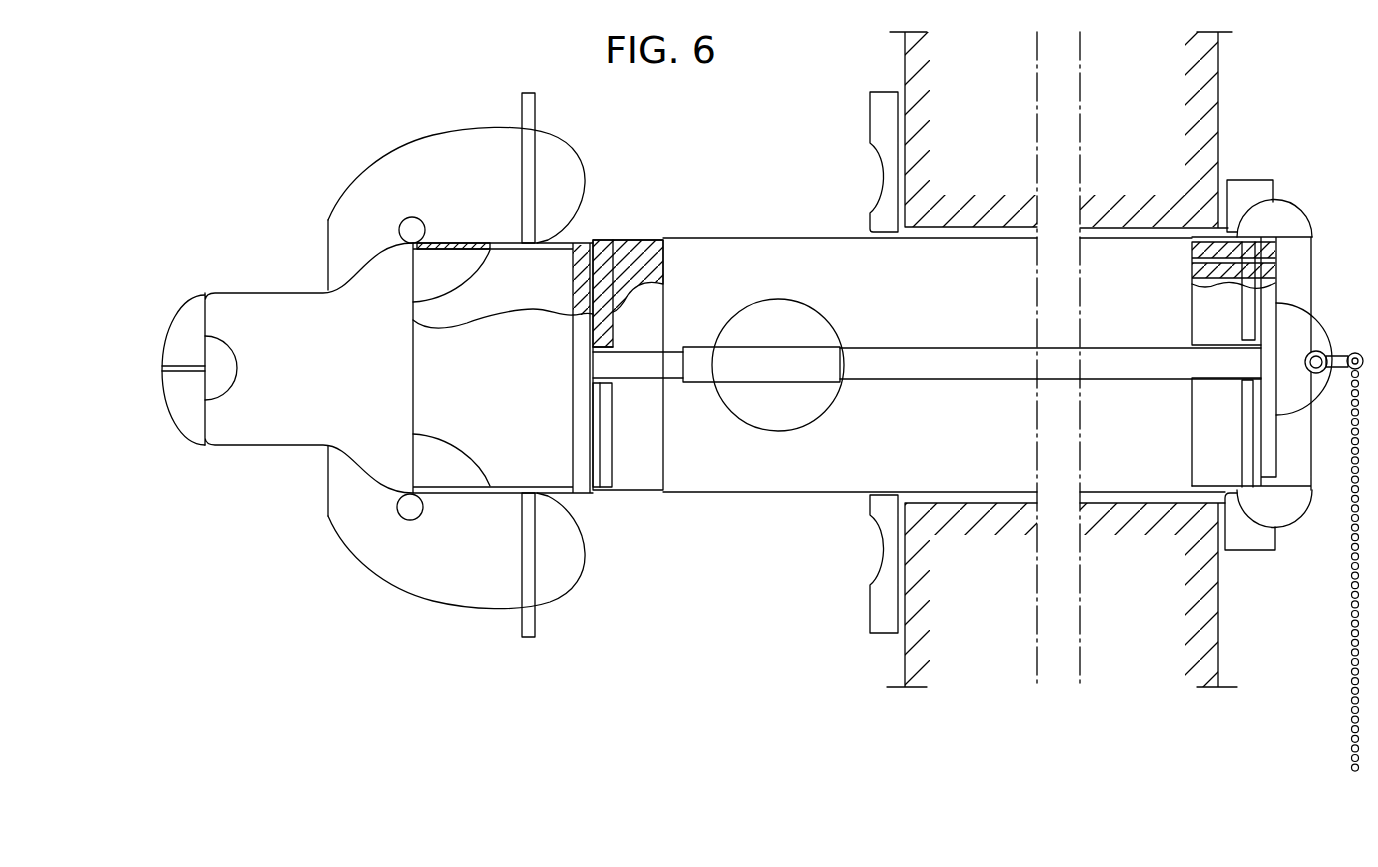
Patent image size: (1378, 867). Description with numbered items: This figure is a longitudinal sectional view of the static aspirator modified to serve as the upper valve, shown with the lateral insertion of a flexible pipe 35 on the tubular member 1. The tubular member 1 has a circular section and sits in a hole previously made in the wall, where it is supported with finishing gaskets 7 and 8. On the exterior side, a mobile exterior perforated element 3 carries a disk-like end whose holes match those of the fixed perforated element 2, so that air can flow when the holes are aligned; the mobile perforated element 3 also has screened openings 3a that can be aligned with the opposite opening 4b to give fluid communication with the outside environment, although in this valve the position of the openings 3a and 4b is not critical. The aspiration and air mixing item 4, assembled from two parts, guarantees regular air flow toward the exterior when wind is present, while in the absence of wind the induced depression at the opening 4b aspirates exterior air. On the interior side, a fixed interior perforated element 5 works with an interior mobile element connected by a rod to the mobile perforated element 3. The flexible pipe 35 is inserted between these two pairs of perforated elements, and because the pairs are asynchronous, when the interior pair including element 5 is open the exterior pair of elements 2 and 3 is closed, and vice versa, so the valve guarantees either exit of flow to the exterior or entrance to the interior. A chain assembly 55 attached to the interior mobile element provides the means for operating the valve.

The tubular member 1 is at (944, 365).
The fixed perforated element 2 is at (628, 365).
The mobile exterior perforated element 3 is at (503, 368).
The screened openings 3a is at (423, 253).
The aspiration and air mixing item 4 is at (373, 367).
The opening 4b is at (429, 369).
The fixed interior perforated element 5 is at (1233, 364).
The finishing gasket 7 is at (884, 362).
The finishing gasket 8 is at (1268, 365).
The flexible pipe 35 is at (778, 365).
The chain assembly 55 is at (1347, 594).